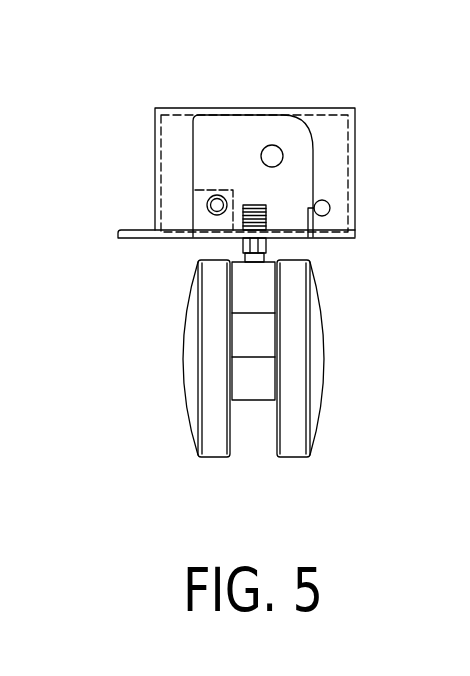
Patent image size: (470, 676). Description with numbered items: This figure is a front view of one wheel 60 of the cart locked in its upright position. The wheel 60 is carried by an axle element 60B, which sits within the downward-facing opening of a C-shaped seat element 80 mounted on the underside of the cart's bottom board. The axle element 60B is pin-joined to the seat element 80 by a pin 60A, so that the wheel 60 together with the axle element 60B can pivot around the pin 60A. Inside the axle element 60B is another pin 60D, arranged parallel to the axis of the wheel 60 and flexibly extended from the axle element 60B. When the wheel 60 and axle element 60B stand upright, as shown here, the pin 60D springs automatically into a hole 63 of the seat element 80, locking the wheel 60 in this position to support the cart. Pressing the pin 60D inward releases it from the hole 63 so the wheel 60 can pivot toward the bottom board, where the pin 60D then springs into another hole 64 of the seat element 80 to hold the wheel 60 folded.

The wheel 60 is at (198, 372).
The pin 60A is at (280, 150).
The axle element 60B is at (210, 150).
The pin 60D is at (207, 205).
The hole 63 is at (208, 192).
The hole 64 is at (330, 208).
The seat element 80 is at (337, 178).